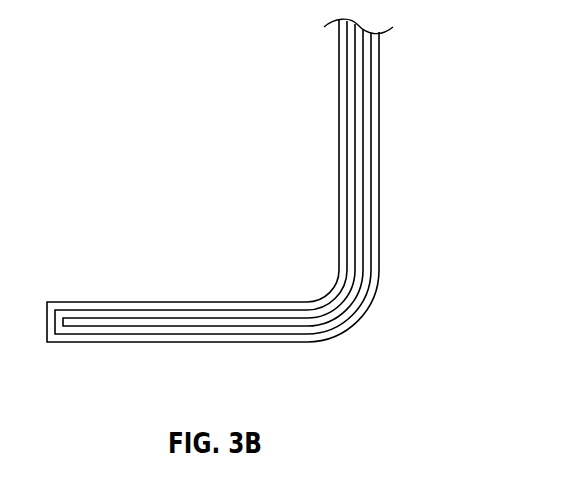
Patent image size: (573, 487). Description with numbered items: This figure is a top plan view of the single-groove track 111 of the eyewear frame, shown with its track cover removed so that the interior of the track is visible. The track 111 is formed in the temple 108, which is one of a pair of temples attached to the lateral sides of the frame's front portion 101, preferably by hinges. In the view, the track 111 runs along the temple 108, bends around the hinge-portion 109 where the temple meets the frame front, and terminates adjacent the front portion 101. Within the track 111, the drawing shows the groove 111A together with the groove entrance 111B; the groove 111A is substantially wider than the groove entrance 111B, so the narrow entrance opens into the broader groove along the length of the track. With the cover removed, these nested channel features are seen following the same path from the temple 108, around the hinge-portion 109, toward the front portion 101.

The front portion 101 is at (257, 201).
The temple 108 is at (386, 153).
The hinge-portion 109 is at (357, 331).
The track 111 is at (257, 191).
The groove 111A is at (62, 308).
The groove entrance 111B is at (157, 323).